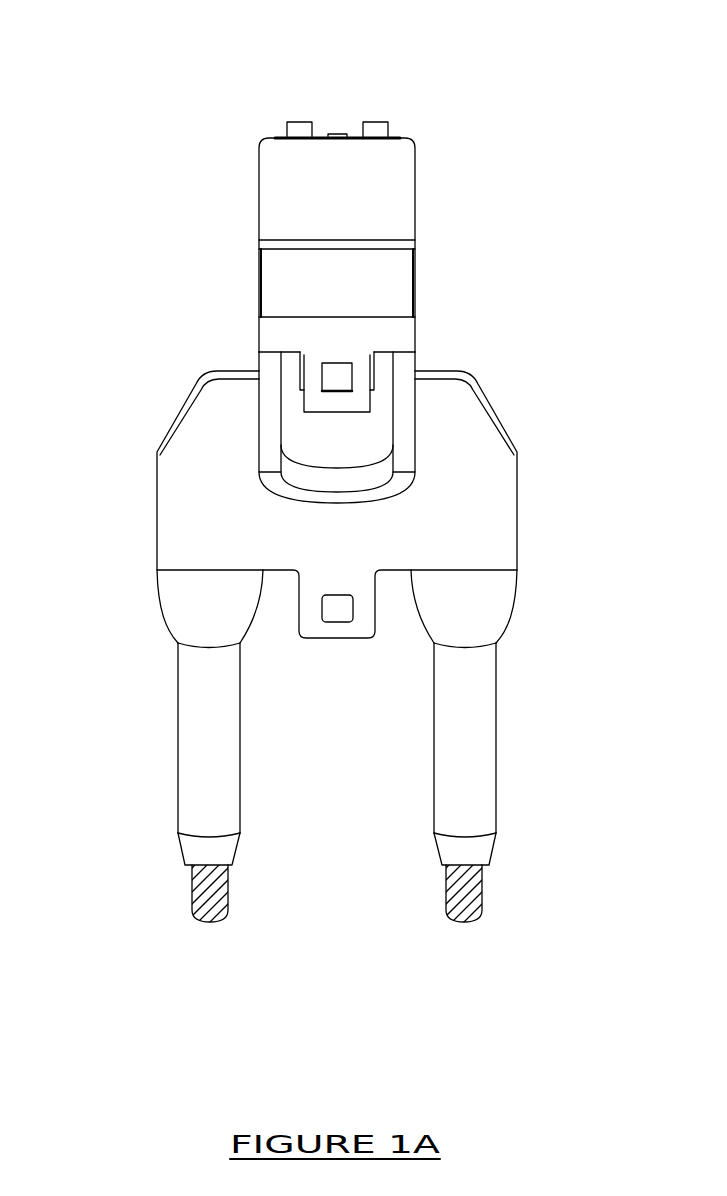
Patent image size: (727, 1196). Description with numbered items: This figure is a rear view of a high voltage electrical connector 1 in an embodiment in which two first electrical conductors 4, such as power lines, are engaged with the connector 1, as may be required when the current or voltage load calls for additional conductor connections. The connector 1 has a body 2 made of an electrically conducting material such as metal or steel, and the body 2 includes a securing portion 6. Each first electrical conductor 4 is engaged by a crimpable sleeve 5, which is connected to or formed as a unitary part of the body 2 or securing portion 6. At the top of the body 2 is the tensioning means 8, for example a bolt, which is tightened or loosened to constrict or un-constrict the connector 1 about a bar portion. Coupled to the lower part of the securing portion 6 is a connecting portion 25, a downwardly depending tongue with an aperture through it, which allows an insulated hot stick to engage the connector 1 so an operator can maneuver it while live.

The high voltage electrical connector 1 is at (226, 211).
The body 2 is at (388, 183).
The first electrical conductor 4 is at (196, 898).
The crimpable sleeve 5 is at (186, 737).
The securing portion 6 is at (392, 293).
The tensioning means 8 is at (298, 123).
The connecting portion 25 is at (316, 401).